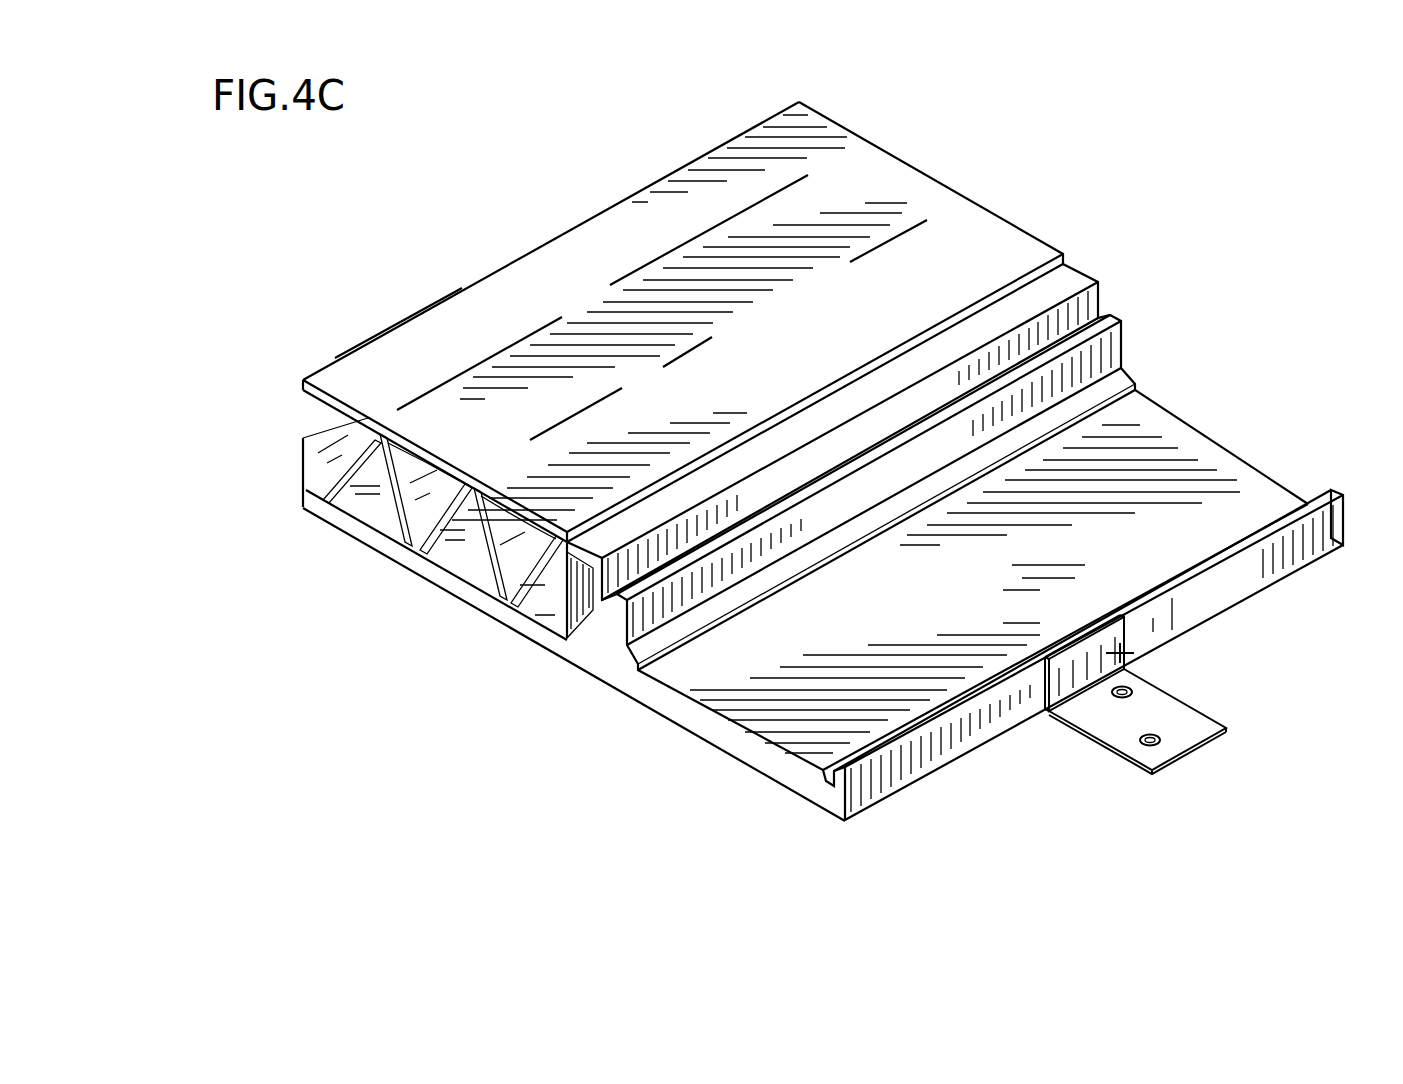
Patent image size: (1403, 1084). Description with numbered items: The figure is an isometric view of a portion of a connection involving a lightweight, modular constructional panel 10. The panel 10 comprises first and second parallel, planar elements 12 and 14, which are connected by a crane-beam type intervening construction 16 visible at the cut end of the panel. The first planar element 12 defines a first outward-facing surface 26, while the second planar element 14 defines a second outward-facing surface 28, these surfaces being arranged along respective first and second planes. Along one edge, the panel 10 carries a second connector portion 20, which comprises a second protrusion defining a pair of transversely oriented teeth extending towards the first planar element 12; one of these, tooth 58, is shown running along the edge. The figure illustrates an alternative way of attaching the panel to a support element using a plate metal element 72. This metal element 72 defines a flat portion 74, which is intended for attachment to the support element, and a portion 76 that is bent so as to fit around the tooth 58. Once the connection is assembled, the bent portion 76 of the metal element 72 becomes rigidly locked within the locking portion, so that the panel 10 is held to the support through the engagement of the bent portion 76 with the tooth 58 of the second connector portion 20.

The constructional panel 10 is at (984, 101).
The first planar element 12 is at (385, 414).
The second planar element 14 is at (437, 588).
The intervening construction 16 is at (423, 518).
The second connector portion 20 is at (684, 753).
The first outward-facing surface 26 is at (967, 260).
The second outward-facing surface 28 is at (507, 645).
The tooth 58 is at (972, 693).
The plate metal element 72 is at (1210, 705).
The flat portion 74 is at (1186, 741).
The bent portion 76 is at (1136, 653).